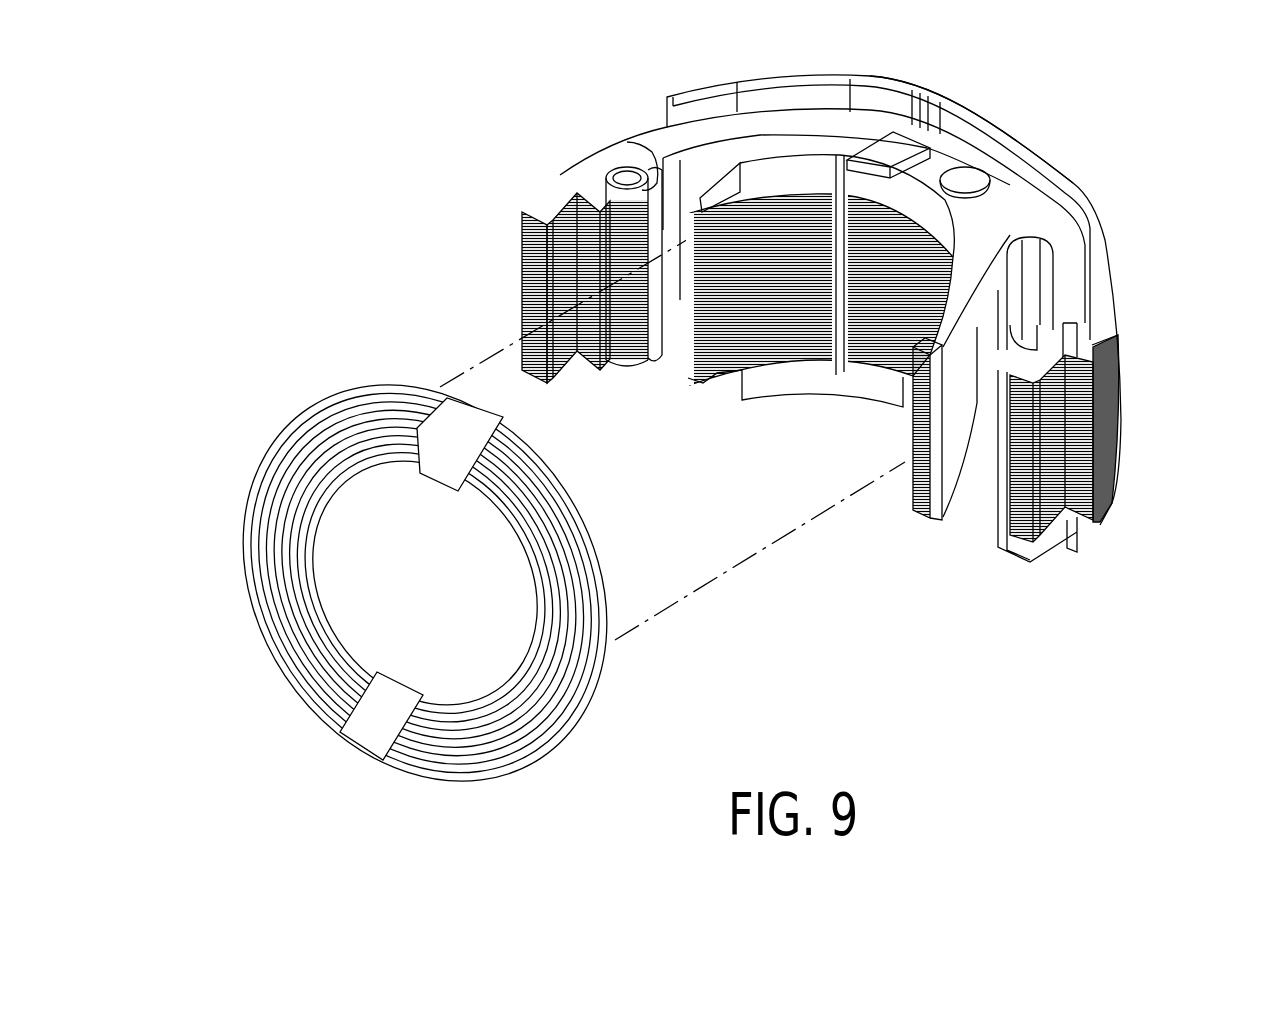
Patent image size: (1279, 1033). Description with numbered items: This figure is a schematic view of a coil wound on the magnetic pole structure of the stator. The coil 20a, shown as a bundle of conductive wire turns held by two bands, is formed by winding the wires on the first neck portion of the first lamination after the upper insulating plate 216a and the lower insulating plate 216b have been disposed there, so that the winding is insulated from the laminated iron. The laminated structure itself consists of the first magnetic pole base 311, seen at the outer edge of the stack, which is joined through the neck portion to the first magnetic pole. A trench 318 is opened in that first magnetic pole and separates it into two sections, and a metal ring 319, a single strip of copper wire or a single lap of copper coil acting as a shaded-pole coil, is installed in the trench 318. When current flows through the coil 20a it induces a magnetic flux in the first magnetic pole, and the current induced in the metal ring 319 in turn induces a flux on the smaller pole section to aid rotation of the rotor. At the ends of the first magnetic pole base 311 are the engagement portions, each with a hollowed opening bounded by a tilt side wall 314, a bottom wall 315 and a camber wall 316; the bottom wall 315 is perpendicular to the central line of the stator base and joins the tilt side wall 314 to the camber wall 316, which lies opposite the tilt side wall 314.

The coil 20a is at (278, 498).
The metal ring 319 is at (840, 205).
The tilt side wall 314 is at (592, 193).
The bottom wall 315 is at (562, 200).
The camber wall 316 is at (548, 212).
The upper insulating plate 216a is at (995, 157).
The first magnetic pole base 311 is at (1118, 275).
The trench 318 is at (838, 376).
The lower insulating plate 216b is at (1080, 536).